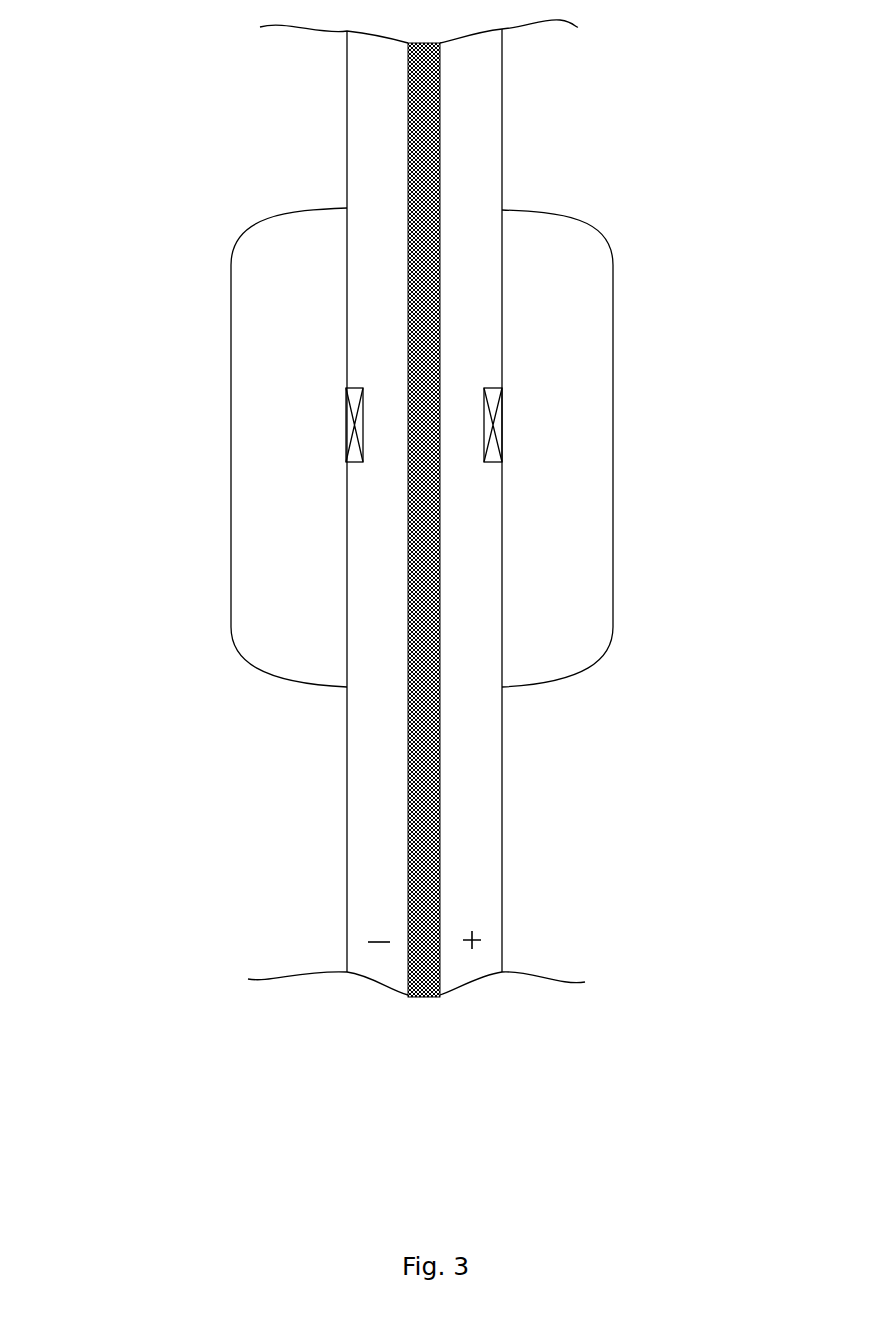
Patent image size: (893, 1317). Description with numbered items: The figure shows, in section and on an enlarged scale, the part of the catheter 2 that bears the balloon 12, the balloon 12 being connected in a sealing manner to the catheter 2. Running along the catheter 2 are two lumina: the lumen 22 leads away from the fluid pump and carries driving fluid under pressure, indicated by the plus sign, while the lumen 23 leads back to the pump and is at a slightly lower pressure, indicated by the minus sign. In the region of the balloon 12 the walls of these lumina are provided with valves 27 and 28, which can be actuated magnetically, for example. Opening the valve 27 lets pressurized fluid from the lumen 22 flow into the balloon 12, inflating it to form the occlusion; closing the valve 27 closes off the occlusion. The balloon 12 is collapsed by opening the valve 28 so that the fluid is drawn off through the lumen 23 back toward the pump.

The catheter 2 is at (346, 103).
The balloon 12 is at (573, 292).
The valve 28 is at (358, 461).
The valve 27 is at (490, 463).
The lumen 23 is at (382, 859).
The lumen 22 is at (472, 871).